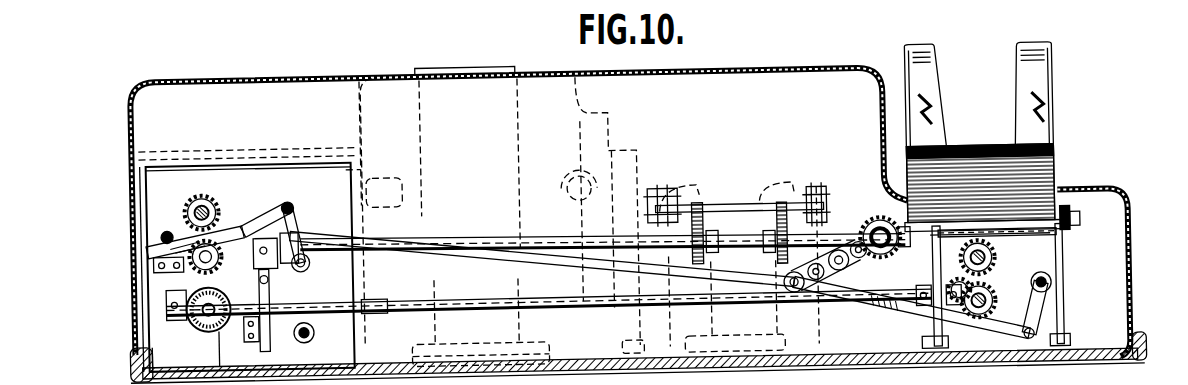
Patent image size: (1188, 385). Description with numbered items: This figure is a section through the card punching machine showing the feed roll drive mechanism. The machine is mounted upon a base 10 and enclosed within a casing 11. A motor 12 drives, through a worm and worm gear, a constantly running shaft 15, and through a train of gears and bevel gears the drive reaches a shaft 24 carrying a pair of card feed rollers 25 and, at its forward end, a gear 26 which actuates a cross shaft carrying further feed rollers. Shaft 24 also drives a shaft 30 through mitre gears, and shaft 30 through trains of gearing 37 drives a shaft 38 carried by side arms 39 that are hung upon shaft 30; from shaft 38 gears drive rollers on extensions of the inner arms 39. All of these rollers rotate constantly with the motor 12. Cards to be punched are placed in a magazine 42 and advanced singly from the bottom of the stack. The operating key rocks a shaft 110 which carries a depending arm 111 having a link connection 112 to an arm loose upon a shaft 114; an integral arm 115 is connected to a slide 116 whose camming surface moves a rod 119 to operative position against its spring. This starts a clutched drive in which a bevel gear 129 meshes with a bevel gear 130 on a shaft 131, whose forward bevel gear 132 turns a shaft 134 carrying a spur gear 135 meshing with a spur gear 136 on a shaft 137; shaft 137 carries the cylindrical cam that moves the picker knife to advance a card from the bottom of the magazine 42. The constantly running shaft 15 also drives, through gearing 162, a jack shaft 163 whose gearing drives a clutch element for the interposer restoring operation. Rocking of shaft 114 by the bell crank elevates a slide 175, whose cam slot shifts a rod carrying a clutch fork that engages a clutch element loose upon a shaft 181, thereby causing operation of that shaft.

The base 10 is at (1141, 352).
The casing 11 is at (738, 69).
The motor 12 is at (456, 66).
The shaft 15 is at (217, 257).
The shaft 24 is at (549, 236).
The card feed rollers 25 is at (770, 252).
The gear 26 is at (1072, 222).
The shaft 30 is at (884, 226).
The trains of gearing 37 is at (858, 282).
The shaft 38 is at (806, 294).
The side arms 39 is at (822, 262).
The magazine 42 is at (981, 139).
The shaft 110 is at (1051, 290).
The depending arm 111 is at (1036, 345).
The link connection 112 is at (632, 306).
The shaft 114 is at (310, 262).
The arm 115 is at (293, 207).
The slide 116 is at (236, 204).
The rod 119 is at (161, 229).
The bevel gear 129 is at (202, 326).
The bevel gear 130 is at (181, 266).
The shaft 131 is at (372, 310).
The bevel gear 132 is at (955, 288).
The shaft 134 is at (992, 305).
The spur gear 135 is at (986, 316).
The spur gear 136 is at (992, 258).
The shaft 137 is at (989, 270).
The gearing 162 is at (204, 190).
The jack shaft 163 is at (184, 207).
The slide 175 is at (268, 290).
The shaft 181 is at (310, 334).